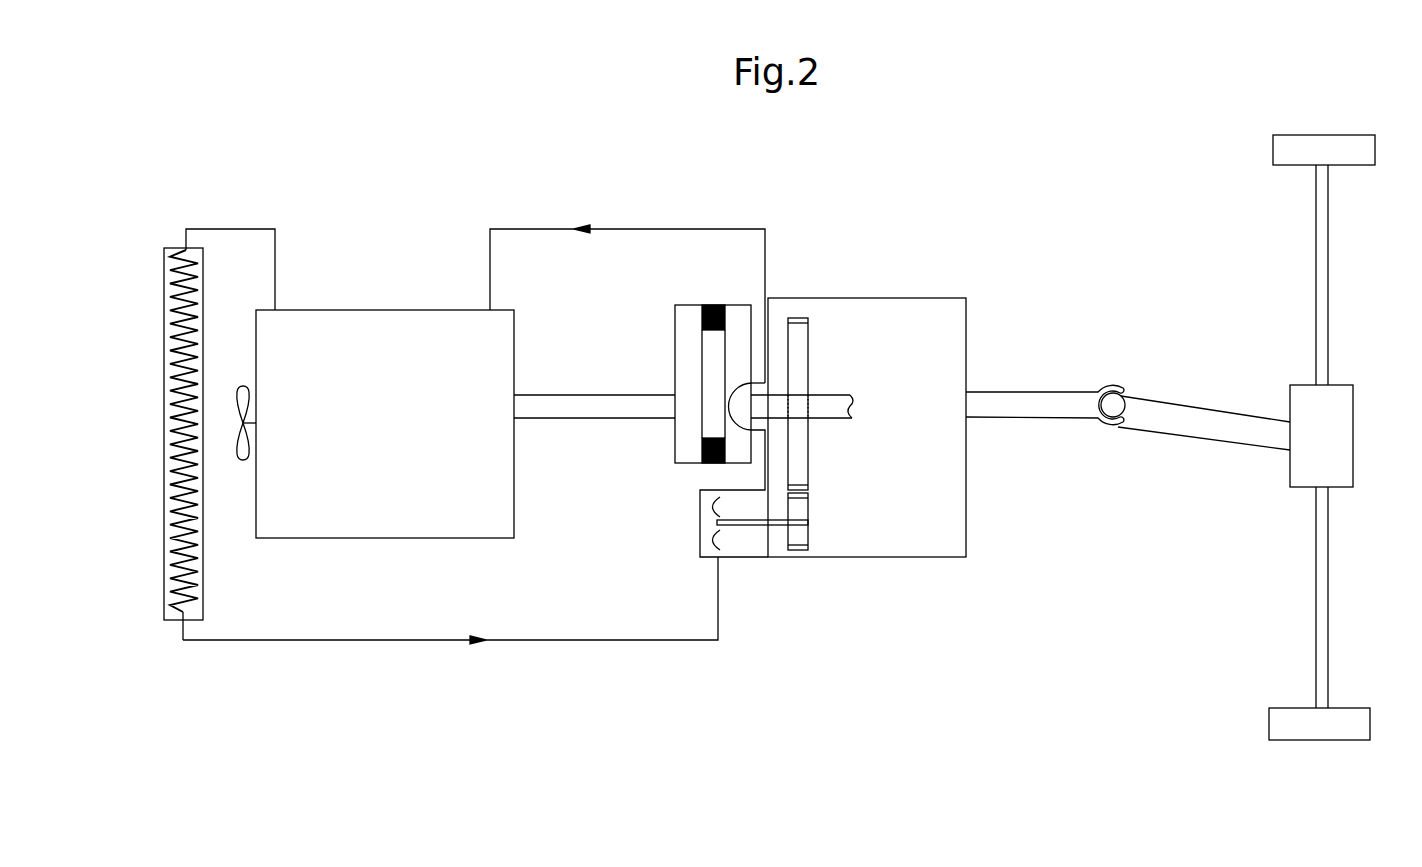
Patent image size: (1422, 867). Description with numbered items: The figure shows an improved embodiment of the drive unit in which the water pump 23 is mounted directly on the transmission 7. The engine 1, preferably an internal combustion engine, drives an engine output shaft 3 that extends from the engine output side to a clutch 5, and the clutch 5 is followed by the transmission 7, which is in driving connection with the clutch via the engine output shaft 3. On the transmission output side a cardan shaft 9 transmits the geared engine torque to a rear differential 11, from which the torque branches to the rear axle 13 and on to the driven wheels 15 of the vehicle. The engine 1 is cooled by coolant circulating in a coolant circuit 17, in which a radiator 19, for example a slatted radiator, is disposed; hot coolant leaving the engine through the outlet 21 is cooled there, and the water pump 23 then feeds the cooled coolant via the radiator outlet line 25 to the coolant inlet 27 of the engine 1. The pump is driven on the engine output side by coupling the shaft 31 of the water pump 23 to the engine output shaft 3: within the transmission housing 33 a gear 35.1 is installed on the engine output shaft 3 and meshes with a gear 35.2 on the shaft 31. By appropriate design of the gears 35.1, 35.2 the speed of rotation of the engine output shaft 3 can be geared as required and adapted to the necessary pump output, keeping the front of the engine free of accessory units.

The engine 1 is at (363, 513).
The engine output shaft 3 is at (634, 395).
The clutch 5 is at (688, 450).
The transmission 7 is at (841, 437).
The cardan shaft 9 is at (1005, 408).
The rear differential 11 is at (1327, 453).
The rear axle 13 is at (1320, 577).
The driven wheels 15 is at (1328, 727).
The coolant circuit 17 is at (297, 640).
The radiator 19 is at (172, 538).
The outlet 21 is at (275, 313).
The water pump 23 is at (747, 547).
The radiator outlet line 25 is at (175, 637).
The coolant inlet 27 is at (493, 310).
The shaft 31 is at (752, 525).
The transmission housing 33 is at (833, 298).
The gear 35.1 is at (798, 383).
The gear 35.2 is at (798, 535).